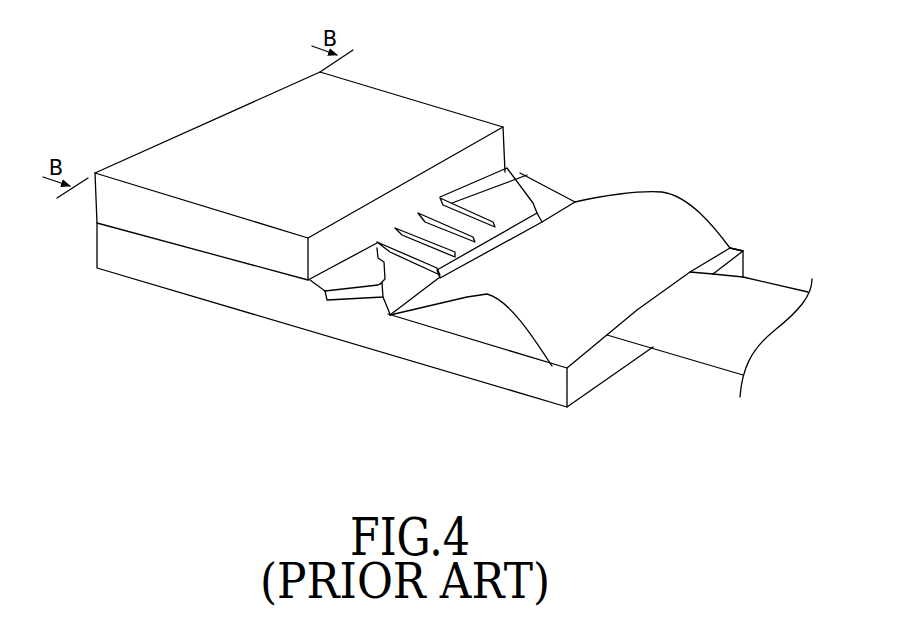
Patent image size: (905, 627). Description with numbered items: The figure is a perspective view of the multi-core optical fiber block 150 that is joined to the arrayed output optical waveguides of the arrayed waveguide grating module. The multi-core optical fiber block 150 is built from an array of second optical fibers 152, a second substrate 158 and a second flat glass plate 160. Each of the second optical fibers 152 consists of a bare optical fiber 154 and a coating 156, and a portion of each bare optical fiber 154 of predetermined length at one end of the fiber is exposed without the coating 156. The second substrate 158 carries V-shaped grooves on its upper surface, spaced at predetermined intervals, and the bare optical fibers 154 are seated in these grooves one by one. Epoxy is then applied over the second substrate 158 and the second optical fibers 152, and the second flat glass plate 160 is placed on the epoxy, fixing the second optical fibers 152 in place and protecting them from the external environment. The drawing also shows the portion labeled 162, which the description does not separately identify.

The multi-core optical fiber block 150 is at (464, 222).
The second optical fibers 152 is at (789, 284).
The bare optical fibers 154 is at (476, 196).
The coating 156 is at (747, 290).
The second substrate 158 is at (193, 287).
The second flat glass plate 160 is at (405, 104).
The bent portion of cable 162 is at (663, 193).